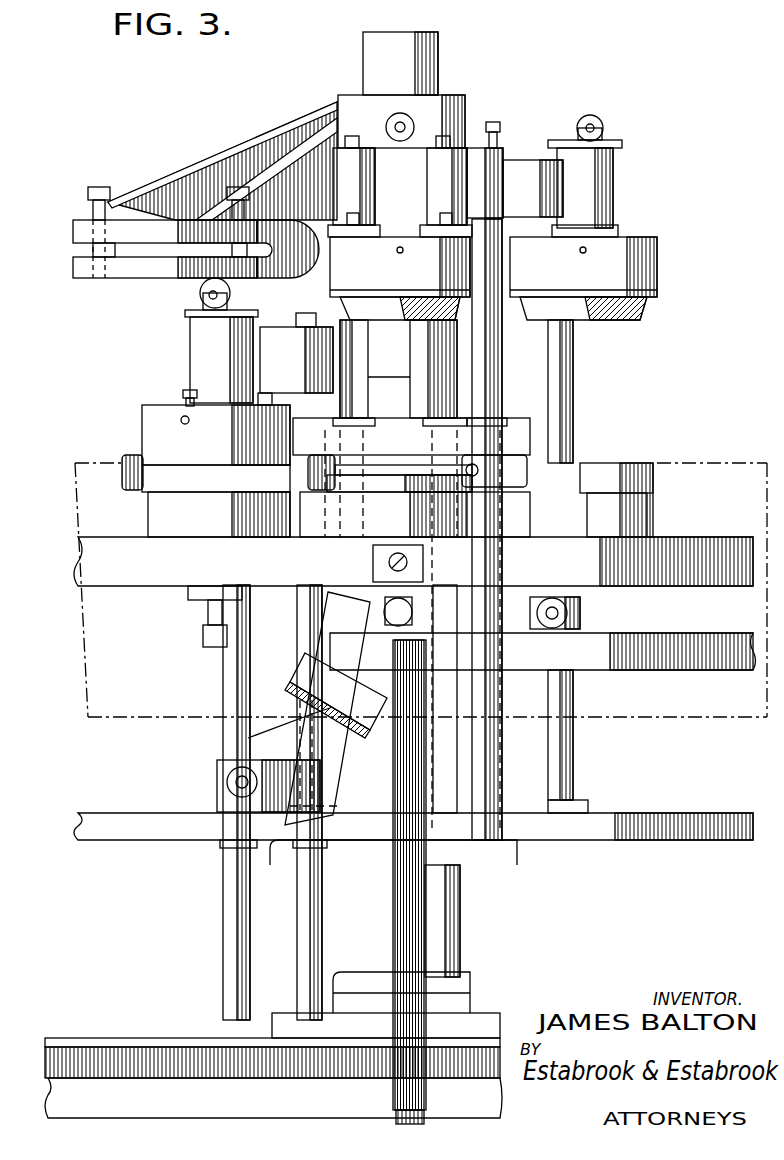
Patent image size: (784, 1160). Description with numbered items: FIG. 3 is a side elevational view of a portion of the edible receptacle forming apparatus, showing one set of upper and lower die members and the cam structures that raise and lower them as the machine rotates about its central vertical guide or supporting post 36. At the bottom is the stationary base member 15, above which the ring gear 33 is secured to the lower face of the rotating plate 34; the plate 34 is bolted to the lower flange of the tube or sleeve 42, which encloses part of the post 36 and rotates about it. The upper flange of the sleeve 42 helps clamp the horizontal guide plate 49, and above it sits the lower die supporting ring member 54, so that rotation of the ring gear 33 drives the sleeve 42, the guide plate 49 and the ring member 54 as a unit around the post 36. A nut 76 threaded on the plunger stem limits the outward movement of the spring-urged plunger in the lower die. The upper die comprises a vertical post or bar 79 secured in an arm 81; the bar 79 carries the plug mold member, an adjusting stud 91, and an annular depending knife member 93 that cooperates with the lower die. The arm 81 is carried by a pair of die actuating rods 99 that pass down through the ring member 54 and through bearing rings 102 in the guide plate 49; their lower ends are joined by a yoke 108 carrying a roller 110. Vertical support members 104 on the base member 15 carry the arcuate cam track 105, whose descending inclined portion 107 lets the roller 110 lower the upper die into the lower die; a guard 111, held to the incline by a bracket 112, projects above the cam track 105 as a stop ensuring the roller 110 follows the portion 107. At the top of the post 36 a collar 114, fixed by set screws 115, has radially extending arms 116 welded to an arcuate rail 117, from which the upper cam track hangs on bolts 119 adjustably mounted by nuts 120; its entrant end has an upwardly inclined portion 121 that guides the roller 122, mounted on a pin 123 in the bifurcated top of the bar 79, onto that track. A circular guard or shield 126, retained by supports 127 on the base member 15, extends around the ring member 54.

The base member 15 is at (30, 1085).
The ring gear 33 is at (200, 1052).
The plate 34 is at (124, 1030).
The guide or supporting post 36 is at (438, 48).
The tube or sleeve 42 is at (460, 944).
The guide plate 49 is at (158, 840).
The lower die supporting ring member 54 is at (126, 586).
The nut 76 is at (203, 637).
The post or bar 79 is at (615, 136).
The arm 81 is at (272, 340).
The stud 91 is at (185, 392).
The knife member 93 is at (142, 435).
The die lifting or actuating rods 99 is at (422, 358).
The bearing ring 102 is at (575, 811).
The support members 104 is at (415, 908).
The cam track 105 is at (630, 670).
The inclined portion 107 is at (320, 750).
The yoke 108 is at (217, 778).
The roller 110 is at (567, 616).
The guard 111 is at (330, 648).
The bracket 112 is at (300, 688).
The collar 114 is at (463, 97).
The set screws 115 is at (490, 122).
The radially extending arms 116 is at (290, 160).
The arcuate shaped rail 117 is at (130, 231).
The bolts 119 is at (93, 250).
The nuts 120 is at (88, 193).
The inclined or upwardly projecting portion 121 is at (288, 250).
The roller 122 is at (597, 118).
The pin 123 is at (585, 128).
The circular guard or shield 126 is at (705, 463).
The supports 127 is at (423, 566).